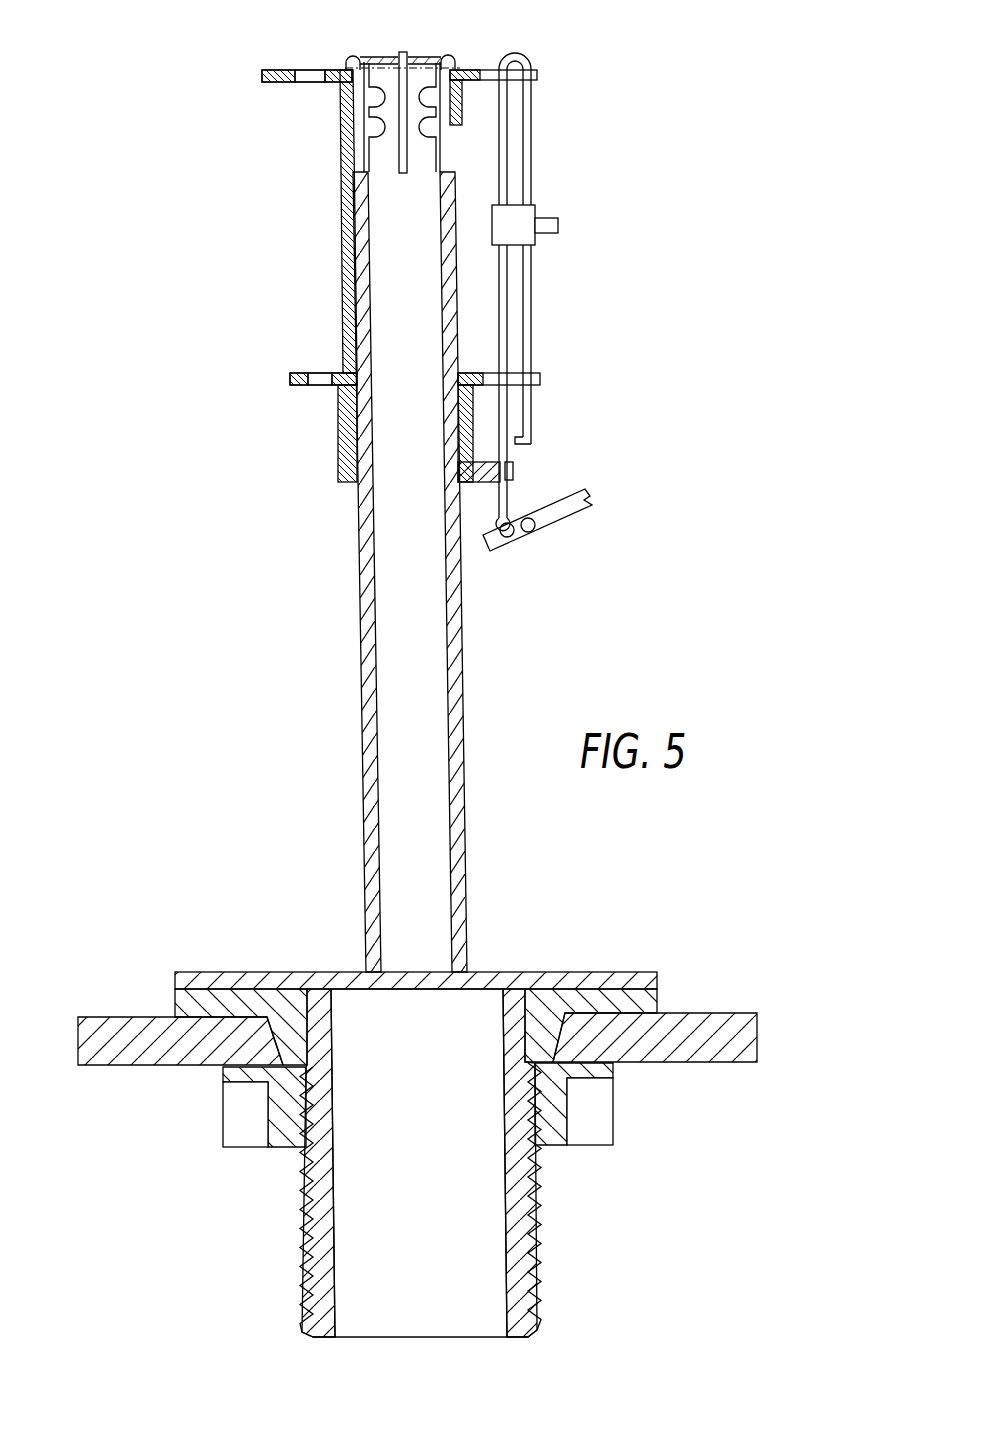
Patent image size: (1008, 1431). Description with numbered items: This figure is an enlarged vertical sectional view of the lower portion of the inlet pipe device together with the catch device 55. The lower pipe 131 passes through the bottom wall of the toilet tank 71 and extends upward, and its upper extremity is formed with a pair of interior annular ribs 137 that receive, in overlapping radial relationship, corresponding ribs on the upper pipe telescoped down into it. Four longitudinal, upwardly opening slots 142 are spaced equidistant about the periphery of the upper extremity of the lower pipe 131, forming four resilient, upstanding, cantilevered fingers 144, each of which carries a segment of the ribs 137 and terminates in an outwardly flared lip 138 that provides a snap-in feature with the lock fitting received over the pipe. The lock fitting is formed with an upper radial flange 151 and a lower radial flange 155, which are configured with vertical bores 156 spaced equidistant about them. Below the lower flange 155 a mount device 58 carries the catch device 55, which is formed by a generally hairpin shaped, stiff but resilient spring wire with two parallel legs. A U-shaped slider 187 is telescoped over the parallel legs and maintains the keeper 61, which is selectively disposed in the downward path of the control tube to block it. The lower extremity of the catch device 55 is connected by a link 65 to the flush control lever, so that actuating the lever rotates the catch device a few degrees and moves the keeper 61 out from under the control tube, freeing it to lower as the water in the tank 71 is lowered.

The lower pipe 131 is at (363, 790).
The interior annular ribs 137 is at (430, 135).
The lips 138 is at (347, 58).
The longitudinal slots 142 is at (400, 62).
The cantilevered fingers 144 is at (380, 73).
The upper radial flange 151 is at (272, 68).
The lower radial flange 155 is at (292, 378).
The vertical bores 156 is at (315, 78).
The mount device 58 is at (337, 462).
The catch device 55 is at (540, 267).
The keeper 61 is at (550, 233).
The link 65 is at (550, 517).
The toilet tank 71 is at (150, 1078).
The slider 187 is at (510, 205).